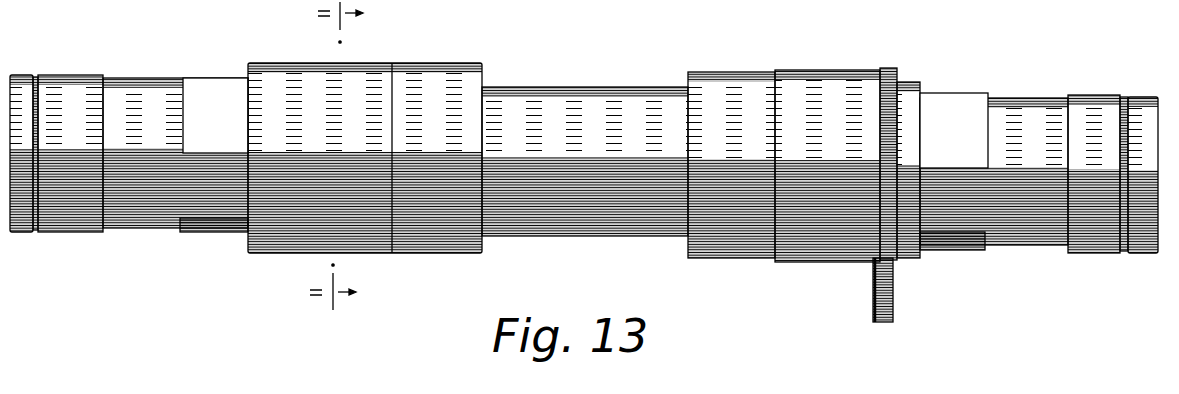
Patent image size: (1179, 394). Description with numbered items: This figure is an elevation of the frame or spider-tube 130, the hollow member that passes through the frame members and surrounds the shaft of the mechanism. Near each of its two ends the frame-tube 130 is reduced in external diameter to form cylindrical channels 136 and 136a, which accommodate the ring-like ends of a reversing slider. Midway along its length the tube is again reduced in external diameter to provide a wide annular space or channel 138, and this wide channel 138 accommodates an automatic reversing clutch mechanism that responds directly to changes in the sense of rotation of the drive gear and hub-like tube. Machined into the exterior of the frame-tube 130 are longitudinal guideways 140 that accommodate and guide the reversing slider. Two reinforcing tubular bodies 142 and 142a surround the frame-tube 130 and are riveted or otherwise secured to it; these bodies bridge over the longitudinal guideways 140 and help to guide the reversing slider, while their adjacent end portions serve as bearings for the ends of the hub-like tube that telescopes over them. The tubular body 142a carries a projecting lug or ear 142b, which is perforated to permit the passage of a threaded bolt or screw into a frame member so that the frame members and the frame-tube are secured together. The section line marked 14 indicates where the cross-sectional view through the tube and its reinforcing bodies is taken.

The frame-tube 130 is at (566, 236).
The cylindrical channel 136 is at (130, 80).
The cylindrical channel 136a is at (1023, 103).
The wide annular channel 138 is at (560, 88).
The longitudinal guideways 140 is at (223, 213).
The reinforcing tubular body 142 is at (377, 68).
The reinforcing tubular body 142a is at (807, 78).
The projecting lug 142b is at (873, 287).
The section line for FIG. 14 is at (357, 156).